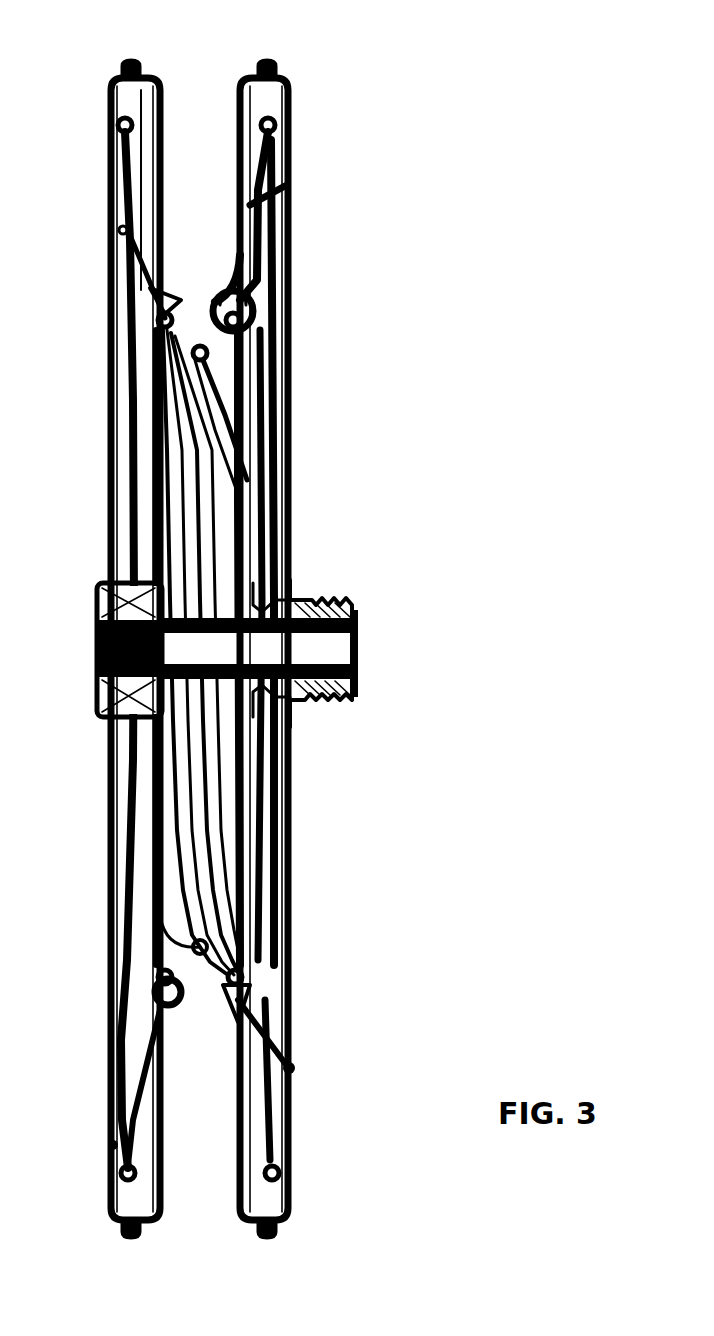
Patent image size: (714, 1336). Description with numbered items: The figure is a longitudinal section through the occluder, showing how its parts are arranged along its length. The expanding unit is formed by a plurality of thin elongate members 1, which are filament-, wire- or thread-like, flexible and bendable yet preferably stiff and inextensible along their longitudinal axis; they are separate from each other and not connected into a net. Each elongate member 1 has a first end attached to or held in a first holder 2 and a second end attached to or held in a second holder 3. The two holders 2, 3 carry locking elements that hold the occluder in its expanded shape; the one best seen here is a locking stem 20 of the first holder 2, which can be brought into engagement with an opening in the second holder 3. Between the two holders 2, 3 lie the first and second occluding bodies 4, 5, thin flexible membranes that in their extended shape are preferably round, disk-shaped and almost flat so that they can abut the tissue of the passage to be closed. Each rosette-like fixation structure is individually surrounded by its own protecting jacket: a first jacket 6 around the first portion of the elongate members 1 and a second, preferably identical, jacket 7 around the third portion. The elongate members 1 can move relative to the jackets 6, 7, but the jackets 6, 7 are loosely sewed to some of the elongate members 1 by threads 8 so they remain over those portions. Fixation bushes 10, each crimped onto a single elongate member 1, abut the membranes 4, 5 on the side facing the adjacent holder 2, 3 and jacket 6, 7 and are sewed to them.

The elongate members 1 is at (289, 142).
The first holder 2 is at (117, 590).
The second holder 3 is at (348, 603).
The first occluding body 4 is at (155, 83).
The second occluding body 5 is at (238, 92).
The first jacket 6 is at (108, 353).
The second jacket 7 is at (282, 442).
The sewing thread 8 is at (290, 197).
The fixation bush 10 is at (282, 293).
The locking stem 20 is at (317, 655).